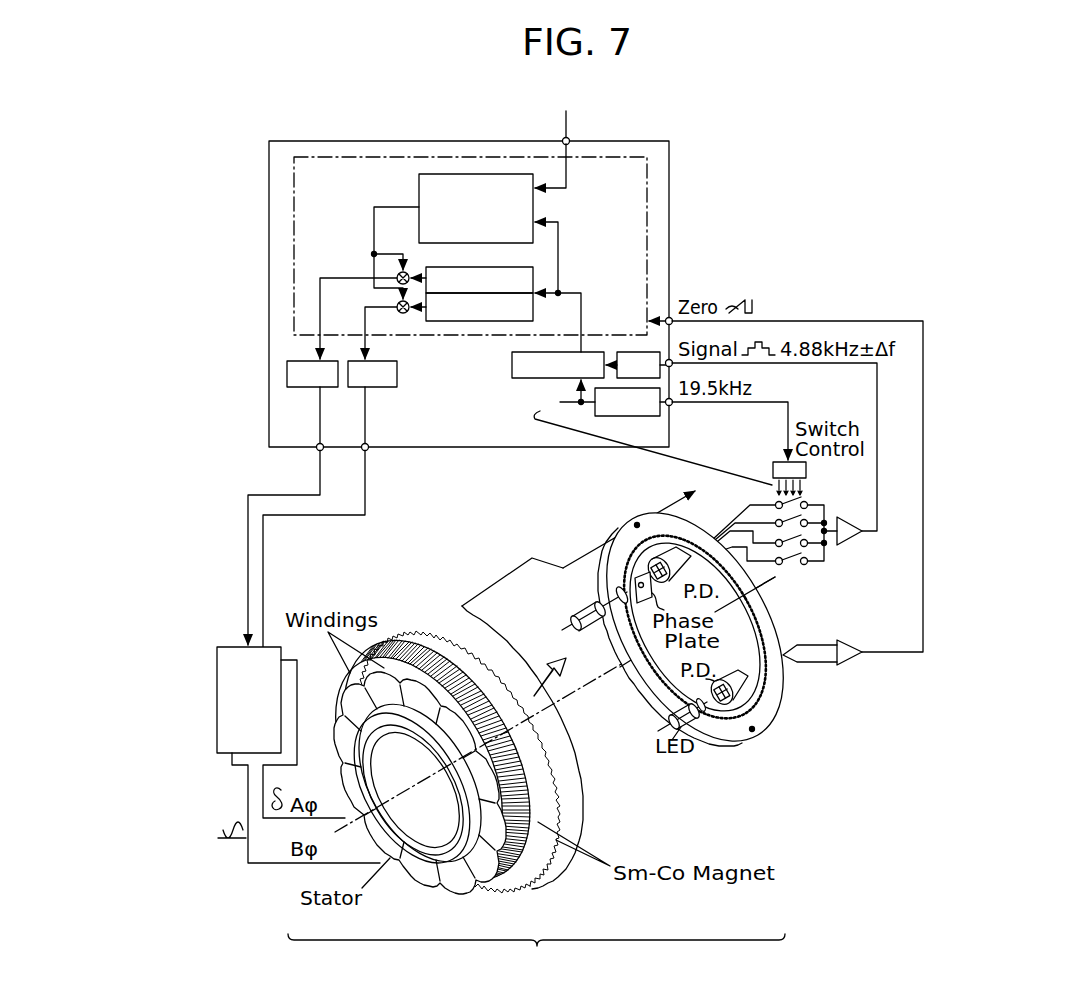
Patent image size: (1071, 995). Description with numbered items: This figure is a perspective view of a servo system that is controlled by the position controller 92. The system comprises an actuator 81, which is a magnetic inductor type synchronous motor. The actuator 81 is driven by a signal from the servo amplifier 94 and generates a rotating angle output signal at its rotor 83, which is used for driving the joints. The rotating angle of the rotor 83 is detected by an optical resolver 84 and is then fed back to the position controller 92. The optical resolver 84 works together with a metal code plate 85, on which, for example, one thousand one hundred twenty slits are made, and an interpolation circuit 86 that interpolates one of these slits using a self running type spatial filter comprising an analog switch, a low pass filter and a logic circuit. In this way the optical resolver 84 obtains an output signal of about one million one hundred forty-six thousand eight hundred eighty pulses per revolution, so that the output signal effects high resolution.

The position controller 92 is at (297, 141).
The servo amplifier 94 is at (231, 647).
The actuator 81 is at (536, 952).
The rotor 83 is at (578, 859).
The optical resolver 84 is at (783, 713).
The metal code plate 85 is at (722, 733).
The interpolation circuit 86 is at (672, 457).